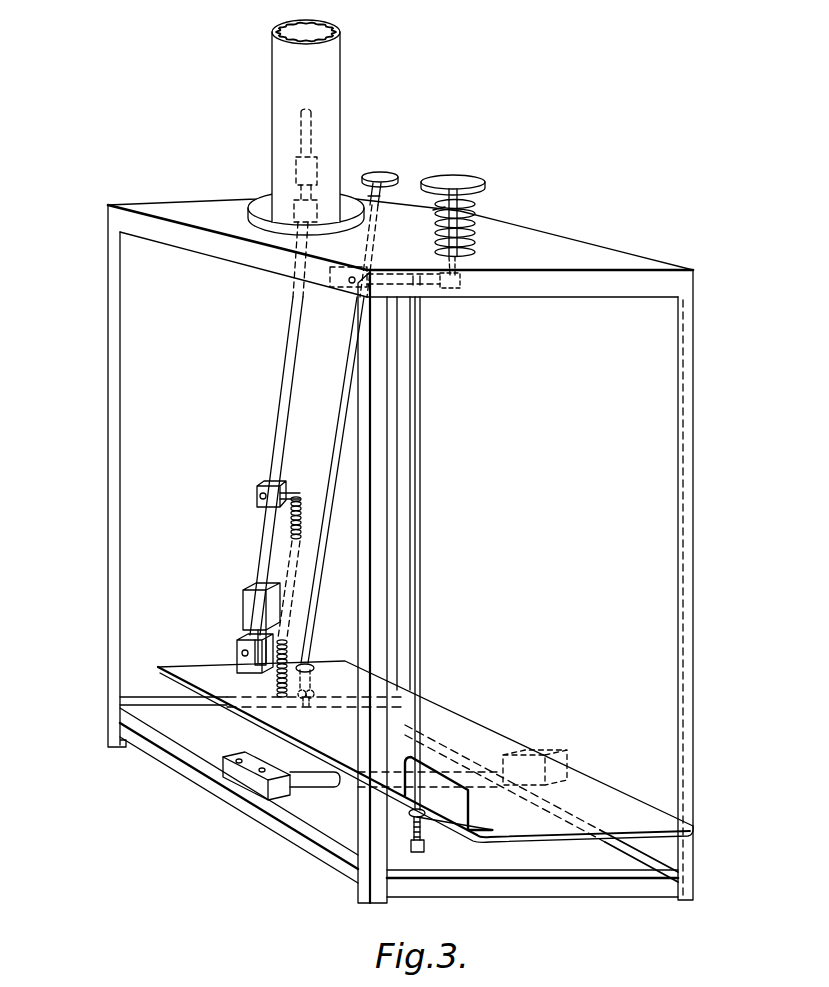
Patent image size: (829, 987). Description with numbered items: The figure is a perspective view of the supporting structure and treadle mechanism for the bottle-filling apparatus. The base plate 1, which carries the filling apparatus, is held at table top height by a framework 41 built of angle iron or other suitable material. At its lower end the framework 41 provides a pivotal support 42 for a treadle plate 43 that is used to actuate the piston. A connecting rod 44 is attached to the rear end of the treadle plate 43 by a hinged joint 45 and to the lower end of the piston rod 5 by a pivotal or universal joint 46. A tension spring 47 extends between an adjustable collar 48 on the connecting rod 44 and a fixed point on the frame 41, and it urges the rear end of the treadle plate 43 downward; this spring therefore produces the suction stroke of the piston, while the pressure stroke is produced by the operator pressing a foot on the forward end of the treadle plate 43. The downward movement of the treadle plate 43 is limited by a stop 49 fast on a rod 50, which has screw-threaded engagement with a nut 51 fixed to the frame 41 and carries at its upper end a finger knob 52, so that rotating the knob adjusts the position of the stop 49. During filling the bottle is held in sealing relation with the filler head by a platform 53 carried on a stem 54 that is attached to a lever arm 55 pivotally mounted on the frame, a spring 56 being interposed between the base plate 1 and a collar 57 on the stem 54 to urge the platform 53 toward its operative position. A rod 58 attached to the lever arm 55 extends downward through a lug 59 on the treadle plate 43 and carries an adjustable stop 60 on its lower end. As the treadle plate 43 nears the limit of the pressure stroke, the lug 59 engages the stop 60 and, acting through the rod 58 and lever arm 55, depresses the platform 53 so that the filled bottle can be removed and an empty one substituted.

The base plate 1 is at (548, 247).
The piston rod 5 is at (312, 122).
The framework 41 is at (178, 698).
The pivotal support 42 is at (264, 790).
The treadle plate 43 is at (578, 768).
The connecting rod 44 is at (278, 428).
The hinged joint 45 is at (238, 652).
The pivotal or universal joint 46 is at (285, 178).
The tension spring 47 is at (298, 500).
The adjustable collar 48 is at (262, 507).
The stop 49 is at (320, 675).
The rod 50 is at (346, 398).
The nut 51 is at (314, 702).
The finger knob 52 is at (382, 172).
The platform 53 is at (456, 172).
The stem 54 is at (456, 270).
The lever arm 55 is at (442, 290).
The spring 56 is at (466, 222).
The collar 57 is at (433, 210).
The rod 58 is at (422, 521).
The lug 59 is at (408, 813).
The adjustable stop 60 is at (425, 845).